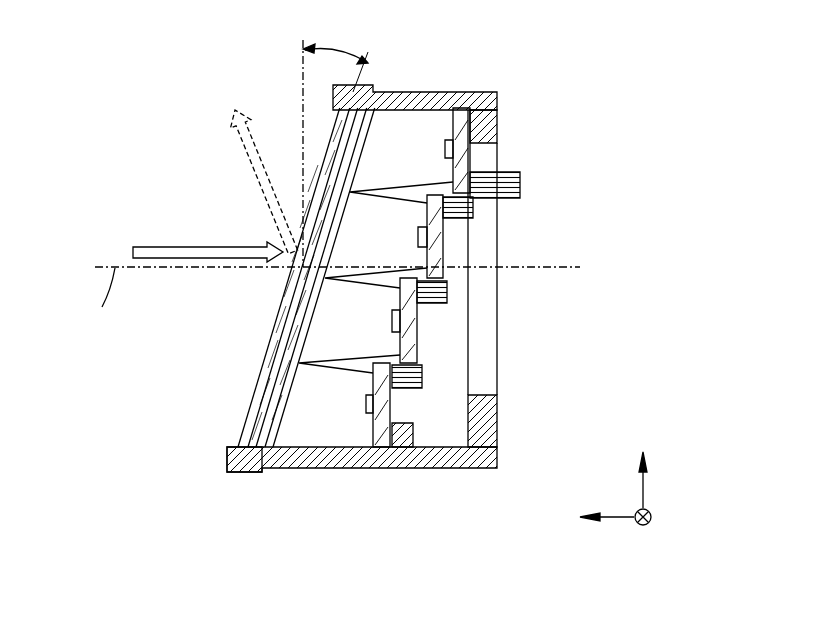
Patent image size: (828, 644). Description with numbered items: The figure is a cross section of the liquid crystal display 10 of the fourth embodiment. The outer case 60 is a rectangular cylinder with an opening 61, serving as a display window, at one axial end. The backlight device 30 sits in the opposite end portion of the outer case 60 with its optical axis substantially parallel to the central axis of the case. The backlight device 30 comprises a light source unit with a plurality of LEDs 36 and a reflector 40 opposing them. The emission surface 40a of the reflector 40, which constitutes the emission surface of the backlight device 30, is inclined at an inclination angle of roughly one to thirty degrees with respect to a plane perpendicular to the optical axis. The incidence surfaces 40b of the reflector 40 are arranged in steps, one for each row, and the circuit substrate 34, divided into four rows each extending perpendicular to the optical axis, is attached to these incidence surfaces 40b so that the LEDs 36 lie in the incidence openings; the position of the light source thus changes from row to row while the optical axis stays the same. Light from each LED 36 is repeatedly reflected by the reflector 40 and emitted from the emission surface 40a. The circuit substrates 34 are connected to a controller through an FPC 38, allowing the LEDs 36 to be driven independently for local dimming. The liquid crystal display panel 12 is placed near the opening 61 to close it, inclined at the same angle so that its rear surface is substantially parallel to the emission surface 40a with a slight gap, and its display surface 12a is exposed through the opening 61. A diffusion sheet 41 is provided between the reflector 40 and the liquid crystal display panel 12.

The liquid crystal display 10 is at (489, 64).
The liquid crystal display panel 12 is at (259, 372).
The display surface 12a is at (273, 333).
The backlight device 30 is at (412, 134).
The circuit substrate 34 is at (473, 121).
The LED 36 is at (452, 150).
The FPC 38 is at (520, 182).
The reflector 40 is at (348, 423).
The emission surface 40a is at (290, 296).
The incidence surface 40b is at (422, 310).
The diffusion sheet 41 is at (368, 122).
The outer case 60 is at (295, 464).
The opening 61 is at (232, 447).